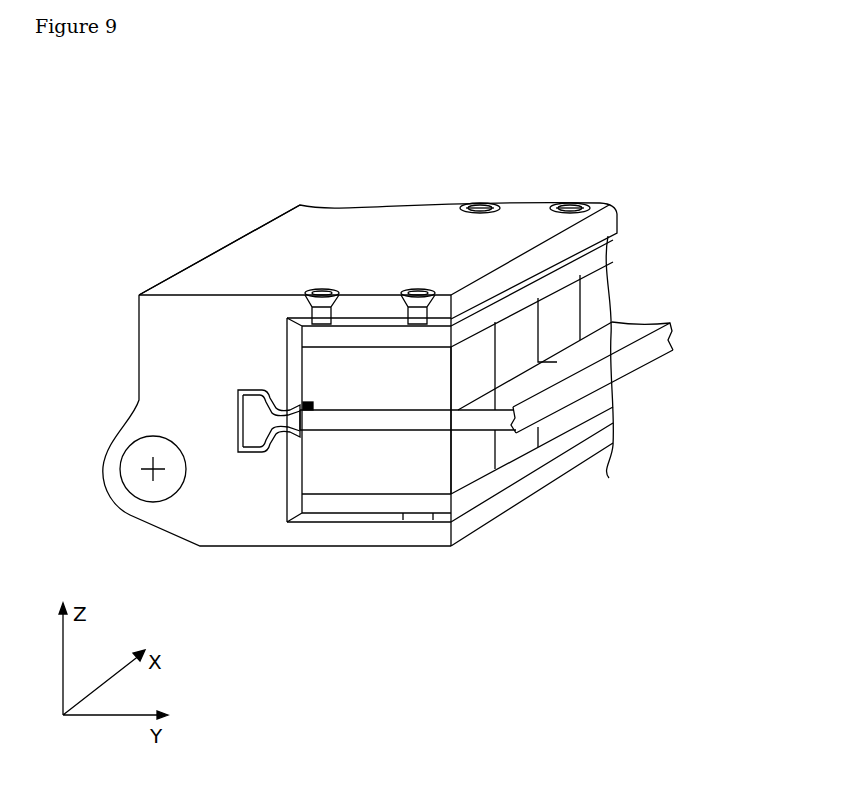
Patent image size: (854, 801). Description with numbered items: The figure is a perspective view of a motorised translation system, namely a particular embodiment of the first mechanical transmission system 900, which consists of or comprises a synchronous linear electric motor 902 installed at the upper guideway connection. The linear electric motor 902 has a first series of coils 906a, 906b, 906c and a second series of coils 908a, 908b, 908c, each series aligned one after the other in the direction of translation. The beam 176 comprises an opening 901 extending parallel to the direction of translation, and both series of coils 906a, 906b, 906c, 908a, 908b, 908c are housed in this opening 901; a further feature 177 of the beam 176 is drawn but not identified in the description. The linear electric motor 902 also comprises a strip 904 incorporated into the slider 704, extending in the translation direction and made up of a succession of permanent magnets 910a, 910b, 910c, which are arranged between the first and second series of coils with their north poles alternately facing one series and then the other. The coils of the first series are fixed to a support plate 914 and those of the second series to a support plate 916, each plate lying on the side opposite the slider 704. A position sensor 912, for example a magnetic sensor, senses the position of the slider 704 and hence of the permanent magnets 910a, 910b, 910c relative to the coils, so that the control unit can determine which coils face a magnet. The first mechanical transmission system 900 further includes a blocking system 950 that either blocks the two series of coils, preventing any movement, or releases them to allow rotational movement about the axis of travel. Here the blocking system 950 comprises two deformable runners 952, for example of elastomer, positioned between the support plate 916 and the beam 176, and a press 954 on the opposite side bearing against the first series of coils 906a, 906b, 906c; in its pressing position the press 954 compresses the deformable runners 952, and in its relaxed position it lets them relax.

The first mechanical transmission system 900 is at (132, 180).
The blocking system 950 is at (608, 122).
The press 954 is at (330, 291).
The support plate 914 is at (306, 337).
The coil of the first series 906a is at (470, 360).
The coil of the first series 906b is at (522, 337).
The coil of the first series 906c is at (558, 318).
The permanent magnet 910a is at (453, 420).
The permanent magnet 910b is at (603, 325).
The permanent magnet 910c is at (612, 323).
The coil of the second series 908a is at (470, 463).
The coil of the second series 908b is at (517, 447).
The coil of the second series 908c is at (563, 423).
The opening 901 is at (303, 402).
The position sensor 912 is at (250, 301).
The beam 176 is at (159, 318).
The hole 177 is at (153, 470).
The slider 704 is at (262, 420).
The strip 904 is at (363, 420).
The deformable runners 952 is at (331, 522).
The support plate 916 is at (428, 505).
The synchronous linear electric motor 902 is at (626, 610).